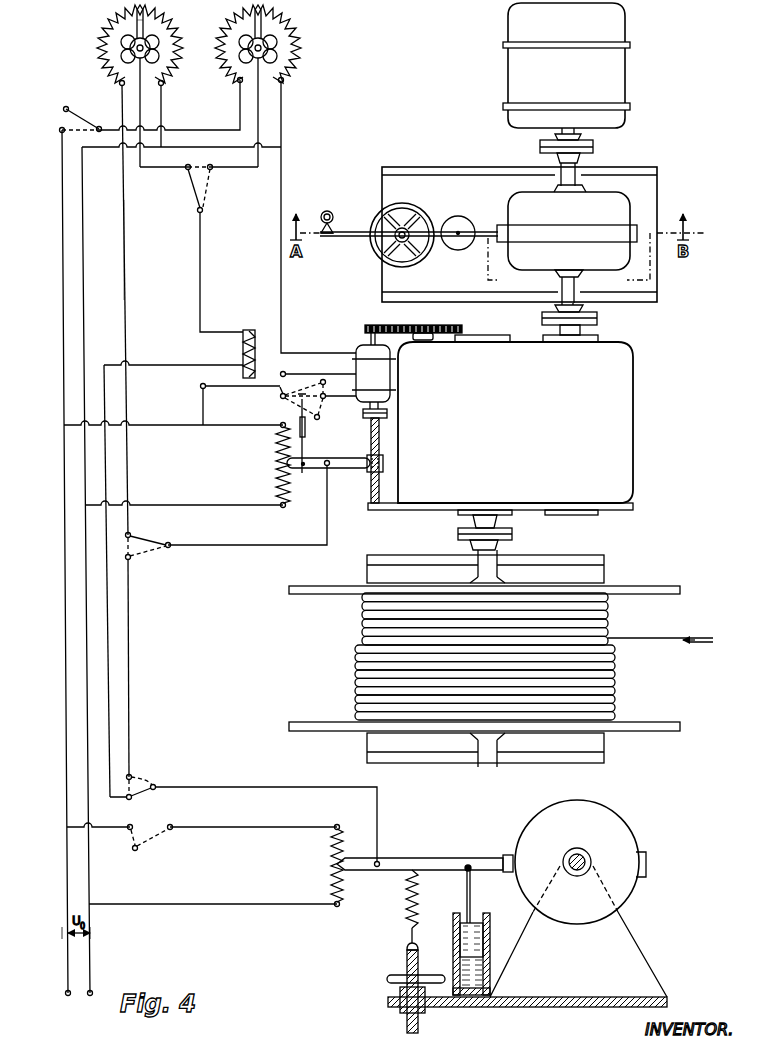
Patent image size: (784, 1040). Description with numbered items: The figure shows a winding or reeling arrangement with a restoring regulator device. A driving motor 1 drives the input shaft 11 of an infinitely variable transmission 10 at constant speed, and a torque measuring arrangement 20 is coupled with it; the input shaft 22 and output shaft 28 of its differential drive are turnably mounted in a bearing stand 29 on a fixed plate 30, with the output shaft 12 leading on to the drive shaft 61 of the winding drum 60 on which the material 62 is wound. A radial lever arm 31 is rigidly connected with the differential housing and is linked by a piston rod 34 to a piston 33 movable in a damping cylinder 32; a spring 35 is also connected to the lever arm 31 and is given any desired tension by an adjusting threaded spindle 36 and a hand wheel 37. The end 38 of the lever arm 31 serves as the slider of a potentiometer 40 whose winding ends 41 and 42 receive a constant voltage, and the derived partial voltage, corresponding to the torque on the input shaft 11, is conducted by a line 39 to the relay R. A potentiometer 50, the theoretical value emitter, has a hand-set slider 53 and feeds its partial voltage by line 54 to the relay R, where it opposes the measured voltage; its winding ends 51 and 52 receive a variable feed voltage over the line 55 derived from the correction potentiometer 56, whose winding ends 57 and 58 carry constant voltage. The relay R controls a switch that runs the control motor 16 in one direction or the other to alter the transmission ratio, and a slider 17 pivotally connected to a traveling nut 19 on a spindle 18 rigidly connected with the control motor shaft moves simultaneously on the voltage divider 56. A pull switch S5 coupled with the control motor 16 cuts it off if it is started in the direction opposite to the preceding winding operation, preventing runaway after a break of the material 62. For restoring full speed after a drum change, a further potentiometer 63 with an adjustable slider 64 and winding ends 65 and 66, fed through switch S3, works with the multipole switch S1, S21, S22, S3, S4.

The driving motor 1 is at (613, 33).
The infinitely variable transmission 10 is at (618, 366).
The input shaft 11 is at (590, 331).
The output shaft 12 is at (505, 528).
The control motor 16 is at (361, 358).
The slider 17 is at (338, 472).
The spindle 18 is at (372, 485).
The traveling nut 19 is at (367, 455).
The torque measuring arrangement 20 is at (648, 196).
The input shaft 22 is at (570, 178).
The output shaft 28 is at (570, 295).
The bearing stand 29 is at (626, 934).
The fixed plate 30 is at (668, 1002).
The lever arm 31 is at (348, 238).
The damping cylinder 32 is at (490, 923).
The piston 33 is at (484, 956).
The piston rod 34 is at (473, 900).
The spring 35 is at (409, 897).
The adjusting threaded spindle 36 is at (409, 968).
The hand wheel 37 is at (387, 981).
The end of lever arm 38 is at (346, 860).
The line 39 is at (108, 648).
The potentiometer 40 is at (332, 211).
The winding end 41 is at (330, 817).
The winding end 42 is at (337, 915).
The potentiometer 50 is at (168, 25).
The winding end 51 is at (164, 85).
The winding end 52 is at (120, 84).
The slider 53 is at (143, 24).
The line 54 is at (202, 247).
The line 55 is at (126, 247).
The potentiometer 56 is at (270, 452).
The winding end 57 is at (282, 422).
The winding end 58 is at (279, 516).
The winding drum 60 is at (600, 561).
The drive shaft 61 is at (505, 547).
The material 62 is at (650, 638).
The potentiometer 63 is at (297, 24).
The adjustable slider 64 is at (270, 48).
The winding end 65 is at (240, 83).
The winding end 66 is at (283, 82).
The relay R is at (255, 339).
The switch S1 is at (148, 540).
The switch S3 is at (64, 120).
The switch S4 is at (202, 844).
The pull switch S5 is at (270, 375).
The switch S21 is at (243, 808).
The switch S22 is at (199, 189).